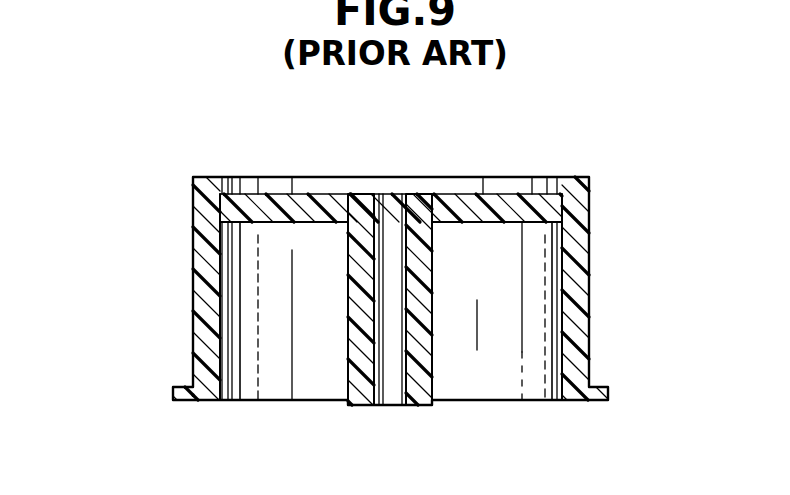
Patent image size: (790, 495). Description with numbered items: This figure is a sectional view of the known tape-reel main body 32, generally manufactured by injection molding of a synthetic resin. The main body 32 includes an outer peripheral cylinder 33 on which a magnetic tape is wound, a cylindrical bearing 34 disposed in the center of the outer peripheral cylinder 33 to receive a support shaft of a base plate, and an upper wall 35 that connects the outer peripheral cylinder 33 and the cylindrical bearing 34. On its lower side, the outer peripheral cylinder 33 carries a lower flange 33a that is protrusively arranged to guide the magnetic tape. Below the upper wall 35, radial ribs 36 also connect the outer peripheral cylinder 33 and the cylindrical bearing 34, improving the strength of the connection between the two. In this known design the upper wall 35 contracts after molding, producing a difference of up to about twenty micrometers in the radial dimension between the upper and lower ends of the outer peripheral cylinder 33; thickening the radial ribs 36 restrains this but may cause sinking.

The tape-reel main body 32 is at (193, 173).
The outer peripheral cylinder 33 is at (203, 302).
The lower flange 33a is at (177, 396).
The cylindrical bearing 34 is at (423, 362).
The upper wall 35 is at (503, 207).
The radial ribs 36 is at (282, 380).